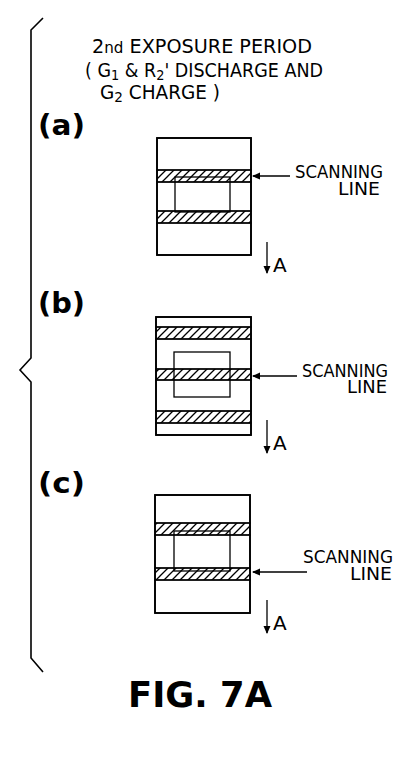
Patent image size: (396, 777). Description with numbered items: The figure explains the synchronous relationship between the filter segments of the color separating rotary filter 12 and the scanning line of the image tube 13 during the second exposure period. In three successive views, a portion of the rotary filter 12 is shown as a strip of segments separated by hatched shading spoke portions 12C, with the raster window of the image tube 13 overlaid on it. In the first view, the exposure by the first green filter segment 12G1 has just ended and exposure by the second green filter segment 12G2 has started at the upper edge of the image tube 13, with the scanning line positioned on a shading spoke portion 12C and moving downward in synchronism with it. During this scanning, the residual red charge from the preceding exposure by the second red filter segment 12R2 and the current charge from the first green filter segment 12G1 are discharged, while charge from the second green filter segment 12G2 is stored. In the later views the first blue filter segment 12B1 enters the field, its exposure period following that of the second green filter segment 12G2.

The color separating rotary filter 12 is at (203, 358).
The shading spoke portion 12C is at (236, 366).
The image tube 13 is at (238, 374).
The second green filter segment 12G2 is at (171, 354).
The first green filter segment 12G1 is at (171, 398).
The second red filter segment 12R2 is at (172, 334).
The first blue filter segment 12B1 is at (171, 408).